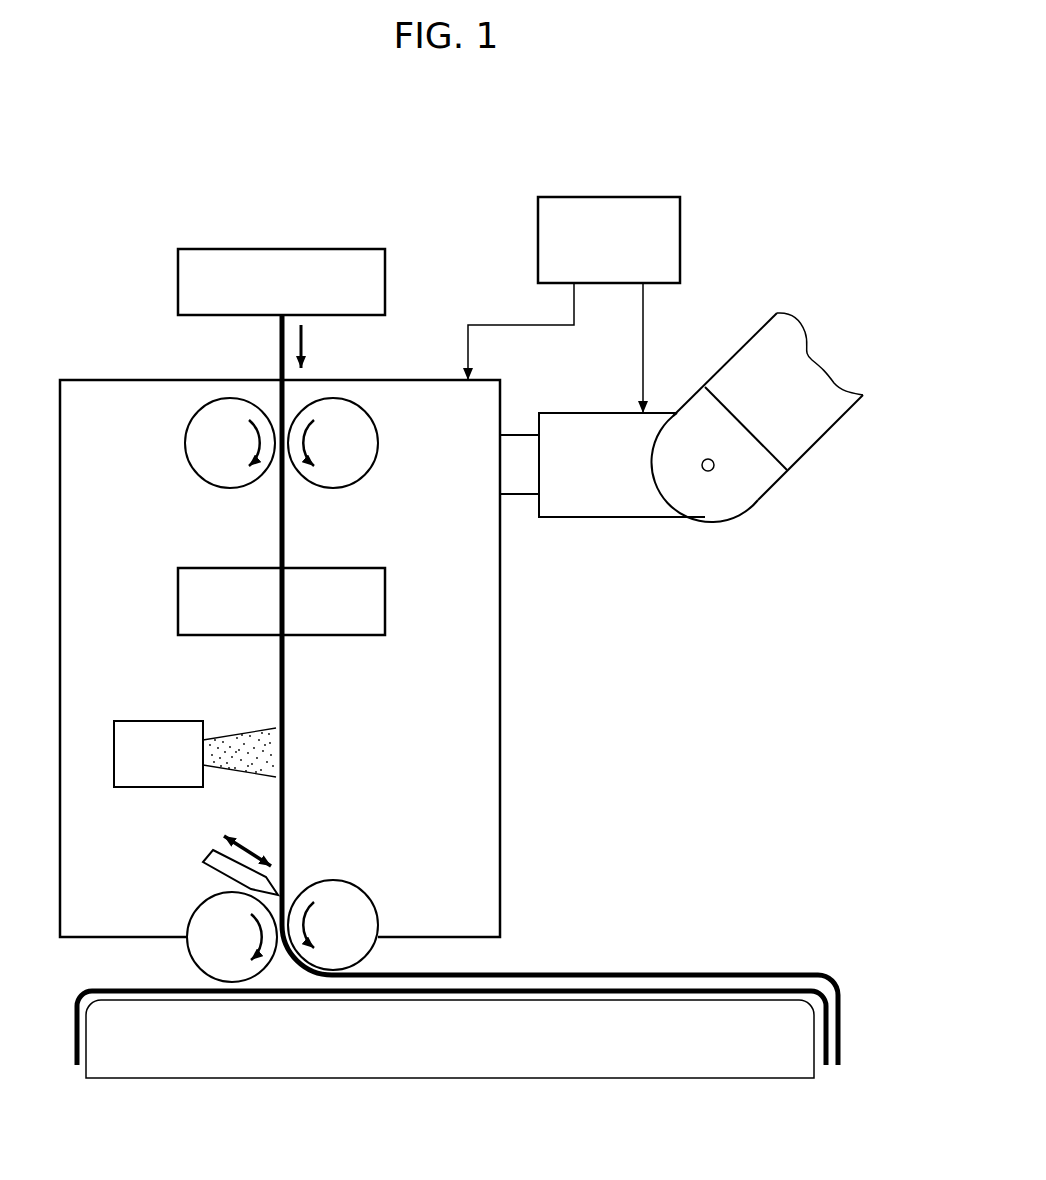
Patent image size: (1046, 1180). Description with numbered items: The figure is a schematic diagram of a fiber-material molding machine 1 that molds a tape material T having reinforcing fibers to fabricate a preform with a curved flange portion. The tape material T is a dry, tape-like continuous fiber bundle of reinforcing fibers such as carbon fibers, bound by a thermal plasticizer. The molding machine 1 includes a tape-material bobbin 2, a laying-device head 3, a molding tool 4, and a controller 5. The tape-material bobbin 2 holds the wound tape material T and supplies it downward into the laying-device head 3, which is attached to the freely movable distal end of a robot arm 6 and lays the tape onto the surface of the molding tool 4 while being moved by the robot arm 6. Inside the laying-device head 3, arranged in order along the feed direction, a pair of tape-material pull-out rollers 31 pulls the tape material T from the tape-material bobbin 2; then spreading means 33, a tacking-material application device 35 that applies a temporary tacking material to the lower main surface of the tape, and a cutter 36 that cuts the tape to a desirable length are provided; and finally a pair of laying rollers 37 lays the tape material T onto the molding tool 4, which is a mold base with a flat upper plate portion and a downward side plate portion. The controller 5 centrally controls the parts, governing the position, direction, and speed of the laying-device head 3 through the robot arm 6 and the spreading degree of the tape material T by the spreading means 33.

The molding machine 1 is at (401, 195).
The tape-material bobbin 2 is at (385, 274).
The laying-device head 3 is at (108, 380).
The molding tool 4 is at (647, 1078).
The controller 5 is at (613, 197).
The robot arm 6 is at (635, 517).
The tape-material pull-out rollers 31 is at (186, 440).
The spreading means 33 is at (385, 592).
The tacking-material application device 35 is at (157, 720).
The cutter 36 is at (210, 855).
The laying rollers 37 is at (195, 912).
The tape material T is at (279, 358).